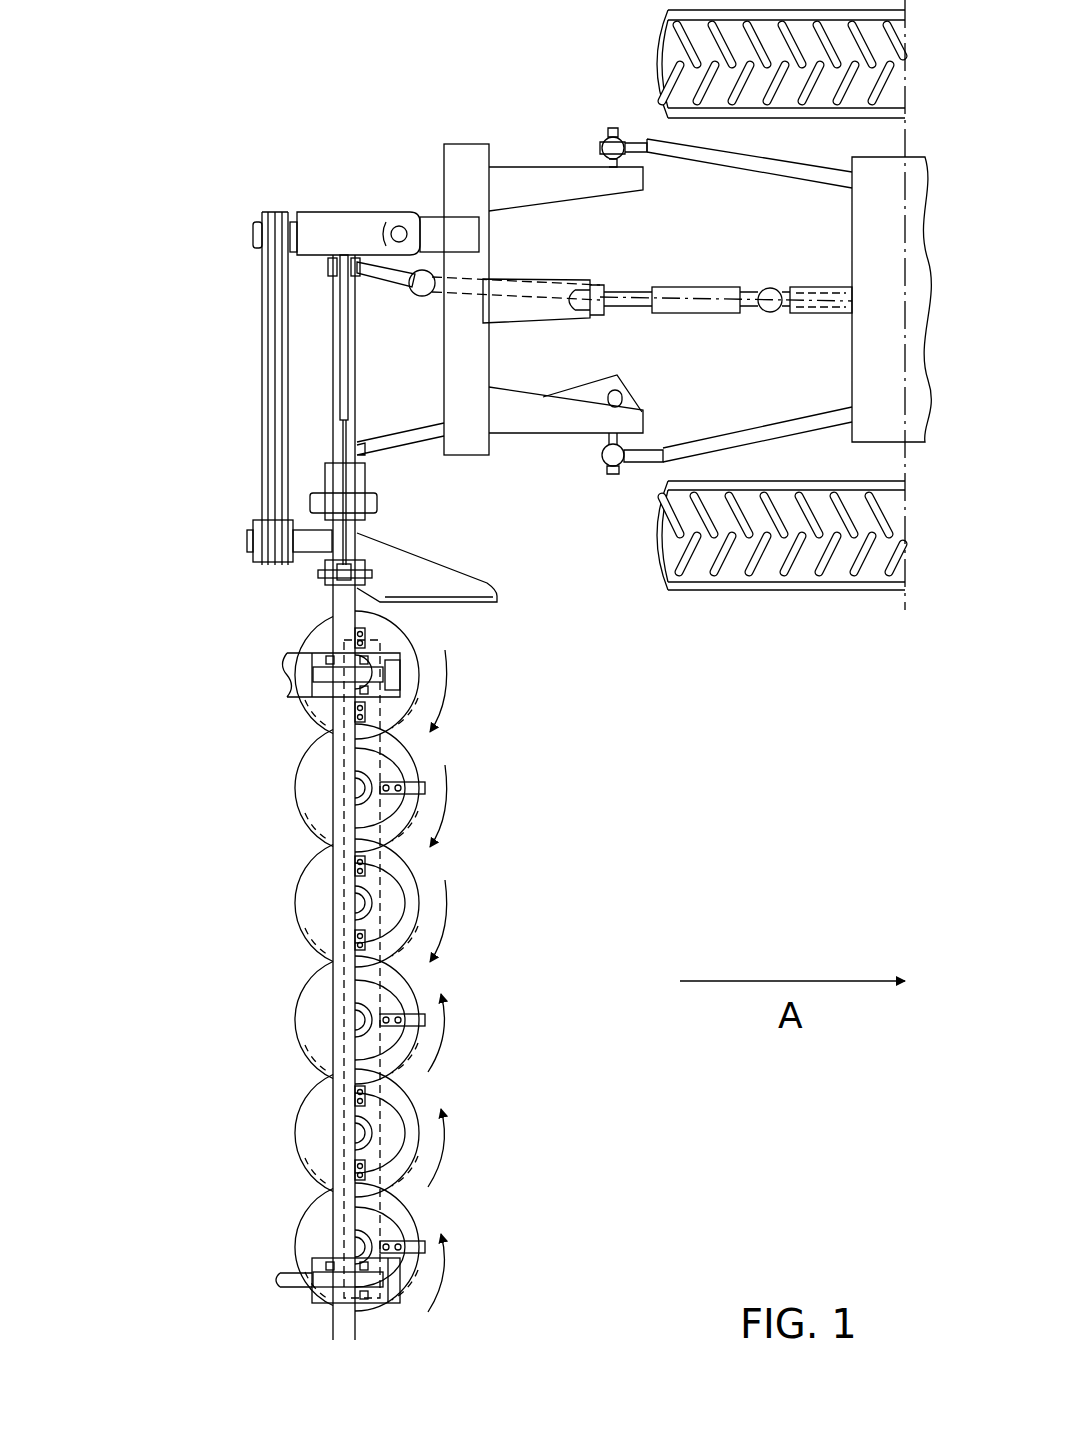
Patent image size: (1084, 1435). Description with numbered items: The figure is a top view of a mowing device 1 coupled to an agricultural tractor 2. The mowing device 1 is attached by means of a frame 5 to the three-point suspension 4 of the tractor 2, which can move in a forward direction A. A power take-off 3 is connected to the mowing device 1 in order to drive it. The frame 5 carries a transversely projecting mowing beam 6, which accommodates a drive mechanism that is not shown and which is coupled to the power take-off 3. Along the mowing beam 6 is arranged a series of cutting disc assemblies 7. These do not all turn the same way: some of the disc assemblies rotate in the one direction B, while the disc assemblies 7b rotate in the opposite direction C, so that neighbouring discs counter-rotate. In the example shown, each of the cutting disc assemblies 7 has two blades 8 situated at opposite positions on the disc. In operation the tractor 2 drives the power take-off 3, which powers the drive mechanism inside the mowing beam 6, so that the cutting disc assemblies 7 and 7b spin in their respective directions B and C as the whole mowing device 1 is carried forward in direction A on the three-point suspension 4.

The mowing device 1 is at (236, 795).
The tractor 2 is at (790, 606).
The power take-off 3 is at (697, 303).
The three-point suspension 4 is at (648, 146).
The frame 5 is at (463, 432).
The mowing beam 6 is at (340, 623).
The cutting disc assemblies 7 is at (308, 905).
The disc assemblies 7b is at (360, 950).
The blades 8 is at (417, 1020).